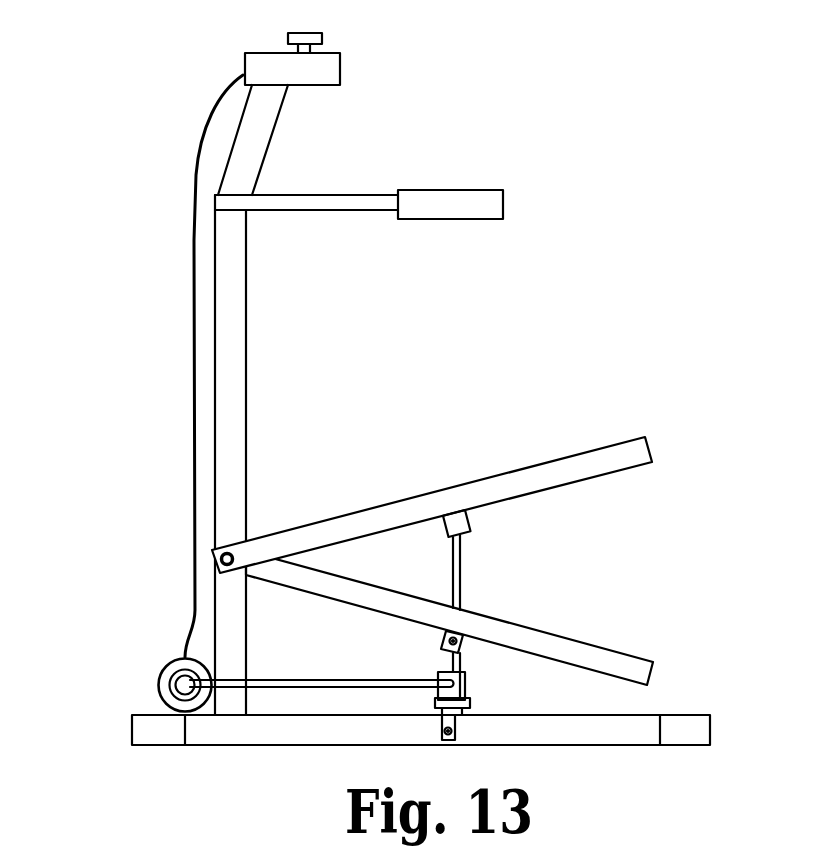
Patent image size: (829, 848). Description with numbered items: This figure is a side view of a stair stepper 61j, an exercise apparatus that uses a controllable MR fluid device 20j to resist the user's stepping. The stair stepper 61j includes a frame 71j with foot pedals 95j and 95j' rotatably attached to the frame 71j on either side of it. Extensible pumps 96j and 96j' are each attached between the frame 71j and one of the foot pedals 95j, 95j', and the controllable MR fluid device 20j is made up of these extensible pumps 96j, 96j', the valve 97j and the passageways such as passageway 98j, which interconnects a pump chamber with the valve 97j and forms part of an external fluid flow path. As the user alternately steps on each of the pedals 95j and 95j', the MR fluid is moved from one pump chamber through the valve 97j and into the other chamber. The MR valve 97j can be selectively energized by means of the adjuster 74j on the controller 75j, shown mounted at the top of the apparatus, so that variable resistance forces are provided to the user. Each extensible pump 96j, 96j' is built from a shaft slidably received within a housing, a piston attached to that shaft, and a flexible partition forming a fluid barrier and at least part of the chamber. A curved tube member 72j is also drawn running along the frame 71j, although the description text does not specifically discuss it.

The stair stepper 61j is at (512, 306).
The frame 71j is at (247, 335).
The curved tube 72j is at (193, 265).
The adjuster 74j is at (308, 33).
The controller 75j is at (340, 63).
The foot pedal 95j is at (433, 501).
The foot pedal 95j' is at (496, 618).
The extensible pump 96j is at (376, 736).
The extensible pump 96j' is at (501, 686).
The valve 97j is at (163, 665).
The passageway 98j is at (387, 680).
The controllable MR fluid device 20j is at (490, 712).